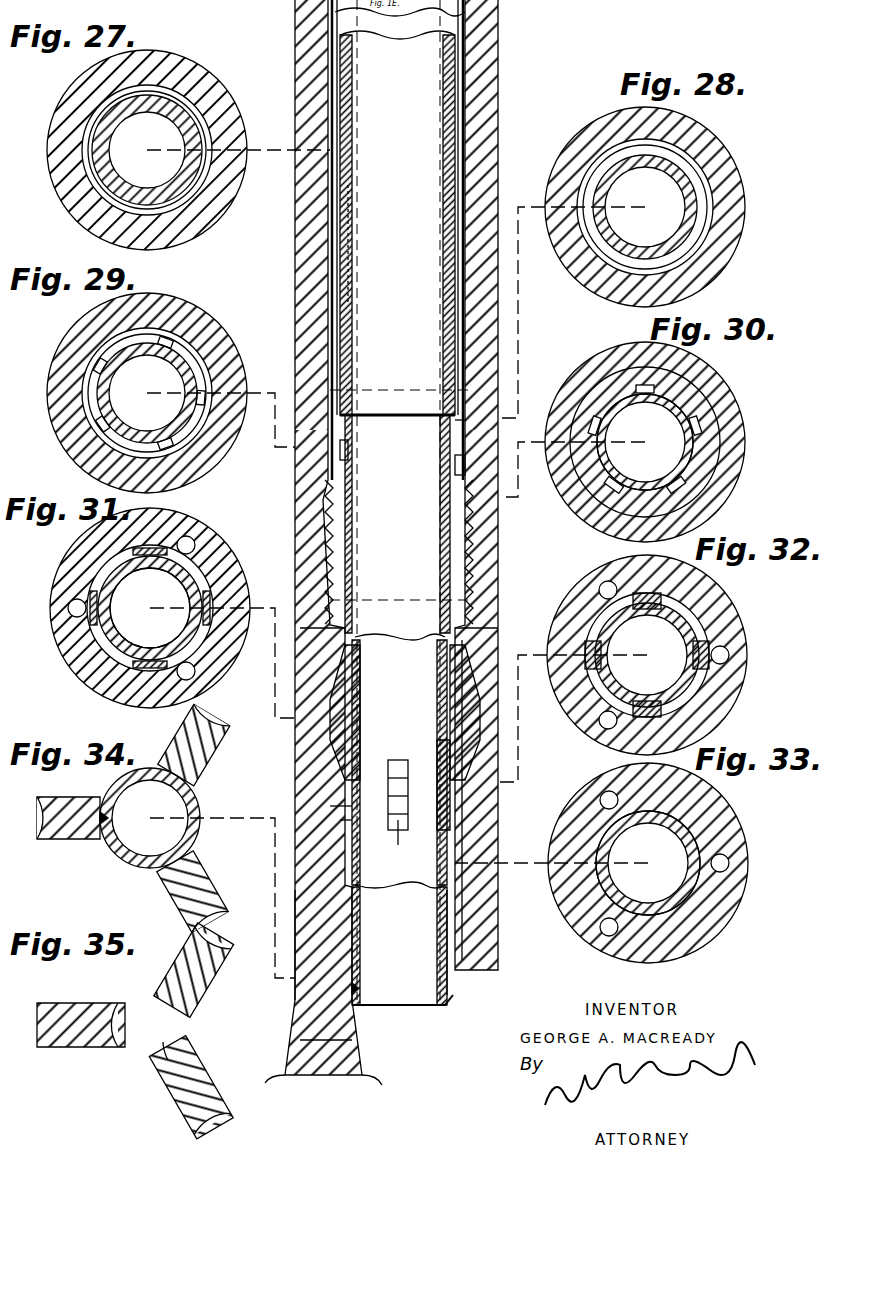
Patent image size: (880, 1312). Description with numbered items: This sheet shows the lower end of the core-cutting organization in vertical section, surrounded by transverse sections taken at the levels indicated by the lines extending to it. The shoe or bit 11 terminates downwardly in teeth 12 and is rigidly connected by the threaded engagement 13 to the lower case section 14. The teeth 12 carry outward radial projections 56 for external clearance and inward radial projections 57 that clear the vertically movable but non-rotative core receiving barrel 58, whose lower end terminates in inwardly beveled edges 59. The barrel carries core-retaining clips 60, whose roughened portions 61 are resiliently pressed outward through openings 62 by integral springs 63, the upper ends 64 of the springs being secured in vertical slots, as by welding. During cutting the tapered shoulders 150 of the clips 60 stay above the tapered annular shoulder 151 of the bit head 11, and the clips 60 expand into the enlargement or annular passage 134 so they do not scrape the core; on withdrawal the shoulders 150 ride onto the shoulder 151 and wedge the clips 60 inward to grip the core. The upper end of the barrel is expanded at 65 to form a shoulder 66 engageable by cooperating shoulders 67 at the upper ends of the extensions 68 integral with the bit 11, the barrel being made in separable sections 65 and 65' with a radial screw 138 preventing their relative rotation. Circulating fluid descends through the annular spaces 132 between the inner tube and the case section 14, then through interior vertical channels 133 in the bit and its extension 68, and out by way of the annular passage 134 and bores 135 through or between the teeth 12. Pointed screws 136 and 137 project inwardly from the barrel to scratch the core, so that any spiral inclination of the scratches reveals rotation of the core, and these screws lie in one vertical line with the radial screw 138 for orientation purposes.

In FIG. 31, the shoe or bit 11 is at (230, 640).
In FIG. 32, the shoe or bit 11 is at (732, 624).
In FIG. 1E, the shoe or bit 11 is at (320, 888).
In FIG. 34, the teeth 12 is at (198, 763).
In FIG. 35, the teeth 12 is at (80, 1030).
In FIG. 1E, the teeth 12 is at (300, 1040).
In FIG. 1E, the threaded engagement 13 is at (315, 545).
In FIG. 27, the lower case section 14 is at (212, 92).
In FIG. 28, the lower case section 14 is at (722, 160).
In FIG. 29, the lower case section 14 is at (228, 372).
In FIG. 30, the lower case section 14 is at (720, 392).
In FIG. 1E, the lower case section 14 is at (488, 125).
In FIG. 35, the outward radial projections 56 is at (205, 1124).
In FIG. 1E, the outward radial projections 56 is at (282, 1078).
In FIG. 35, the inward radial projections 57 is at (165, 1060).
In FIG. 1E, the inward radial projections 57 is at (386, 1084).
In FIG. 28, the core receiving barrel 58 is at (692, 208).
In FIG. 30, the core receiving barrel 58 is at (690, 442).
In FIG. 31, the core receiving barrel 58 is at (186, 640).
In FIG. 32, the core receiving barrel 58 is at (604, 690).
In FIG. 34, the core receiving barrel 58 is at (200, 800).
In FIG. 1E, the core receiving barrel 58 is at (423, 990).
In FIG. 1E, the inwardly beveled edges 59 is at (458, 999).
In FIG. 32, the core-retaining clips 60 is at (700, 660).
In FIG. 1E, the core-retaining clips 60 is at (441, 762).
In FIG. 1E, the roughened portions 61 is at (411, 837).
In FIG. 1E, the openings 62 is at (386, 786).
In FIG. 1E, the integral springs 63 is at (350, 705).
In FIG. 31, the upper ends of springs 64 is at (205, 605).
In FIG. 1E, the upper ends of springs 64 is at (362, 665).
In FIG. 27, the expanded upper end of core barrel 65 is at (183, 150).
In FIG. 1E, the expanded upper end of core barrel 65 is at (352, 223).
In FIG. 1E, the separable core barrel section 65' is at (437, 36).
In FIG. 1E, the shoulder 66 is at (465, 418).
In FIG. 1E, the cooperating shoulders 67 is at (460, 430).
In FIG. 29, the extensions 68 is at (198, 393).
In FIG. 1E, the extensions 68 is at (466, 462).
In FIG. 27, the annular spaces 132 is at (170, 95).
In FIG. 28, the annular spaces 132 is at (700, 234).
In FIG. 29, the annular spaces 132 is at (160, 336).
In FIG. 1E, the annular spaces 132 is at (473, 90).
In FIG. 1E, the interior vertical channels 133 is at (470, 580).
In FIG. 1E, the annular passage 134 is at (470, 690).
In FIG. 31, the bores 135 is at (195, 550).
In FIG. 32, the bores 135 is at (730, 656).
In FIG. 33, the bores 135 is at (722, 860).
In FIG. 1E, the bores 135 is at (470, 840).
In FIG. 34, the pointed screw 136 is at (110, 818).
In FIG. 1E, the pointed screw 136 is at (350, 988).
In FIG. 1E, the pointed screw 137 is at (340, 450).
In FIG. 1E, the radial screw 138 is at (342, 232).
In FIG. 1E, the tapered shoulders of clips 150 is at (330, 806).
In FIG. 1E, the tapered annular shoulder 151 is at (340, 820).